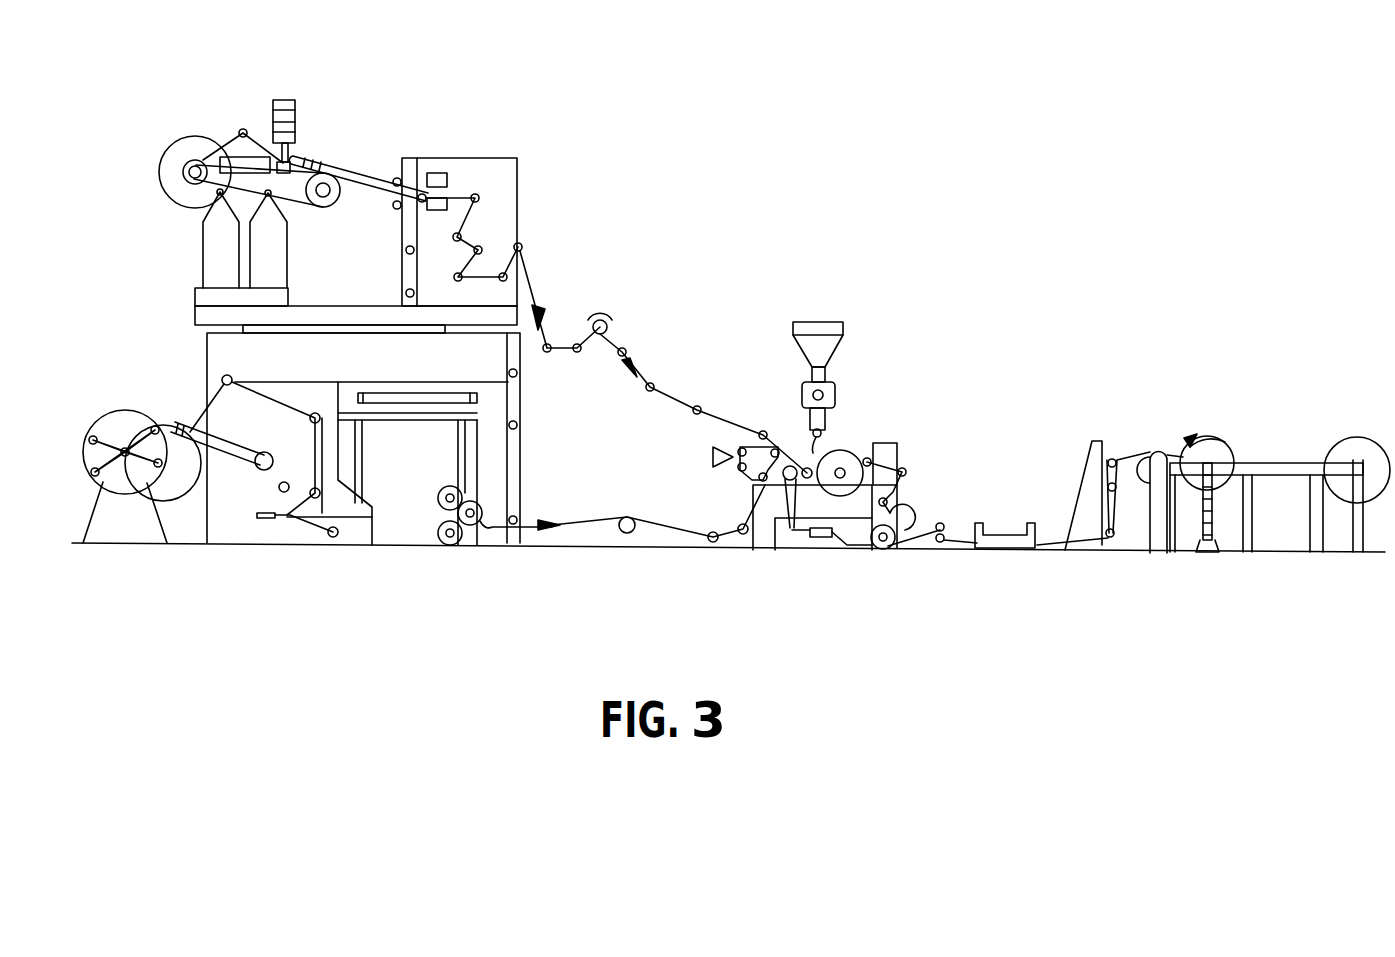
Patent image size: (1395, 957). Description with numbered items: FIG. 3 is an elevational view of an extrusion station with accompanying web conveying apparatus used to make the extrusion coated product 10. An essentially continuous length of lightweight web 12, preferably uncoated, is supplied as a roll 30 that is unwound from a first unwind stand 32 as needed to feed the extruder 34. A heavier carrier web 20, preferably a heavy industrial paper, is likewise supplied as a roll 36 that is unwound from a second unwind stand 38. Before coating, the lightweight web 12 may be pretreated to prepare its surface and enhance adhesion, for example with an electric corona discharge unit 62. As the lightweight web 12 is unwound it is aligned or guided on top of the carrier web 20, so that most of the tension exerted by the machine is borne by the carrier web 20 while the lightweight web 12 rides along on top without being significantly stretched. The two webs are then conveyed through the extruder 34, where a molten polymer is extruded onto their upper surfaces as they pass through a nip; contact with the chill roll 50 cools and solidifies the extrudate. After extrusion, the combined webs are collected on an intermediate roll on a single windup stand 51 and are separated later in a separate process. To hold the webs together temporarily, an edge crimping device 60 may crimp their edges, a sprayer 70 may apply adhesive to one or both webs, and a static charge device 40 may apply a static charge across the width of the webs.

The extrusion coated product 10 is at (930, 552).
The lightweight web 12 is at (532, 278).
The carrier web 20 is at (533, 530).
The roll 30 is at (195, 137).
The first unwind stand 32 is at (275, 268).
The extruder 34 is at (845, 342).
The roll 36 is at (190, 500).
The second unwind stand 38 is at (97, 523).
The static charge device 40 is at (703, 402).
The chill roll 50 is at (833, 453).
The windup stand 51 is at (1223, 448).
The edge crimping device 60 is at (943, 522).
The electric corona discharge unit 62 is at (607, 303).
The sprayer 70 is at (713, 457).